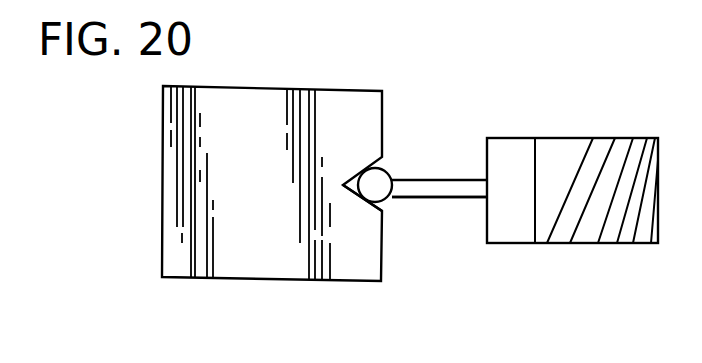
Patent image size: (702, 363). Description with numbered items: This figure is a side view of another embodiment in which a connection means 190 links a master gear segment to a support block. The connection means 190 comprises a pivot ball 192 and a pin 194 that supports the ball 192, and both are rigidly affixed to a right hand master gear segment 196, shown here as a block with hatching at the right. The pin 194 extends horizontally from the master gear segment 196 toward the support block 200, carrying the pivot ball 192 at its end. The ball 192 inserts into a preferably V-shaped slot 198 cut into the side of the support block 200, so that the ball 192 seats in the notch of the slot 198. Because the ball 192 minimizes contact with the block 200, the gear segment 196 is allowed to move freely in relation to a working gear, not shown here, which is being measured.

The support block 200 is at (339, 88).
The V-shaped slot 198 is at (383, 165).
The pin 194 is at (470, 179).
The right hand master gear segment 196 is at (572, 138).
The connection means 190 is at (450, 197).
The pivot ball 192 is at (382, 207).